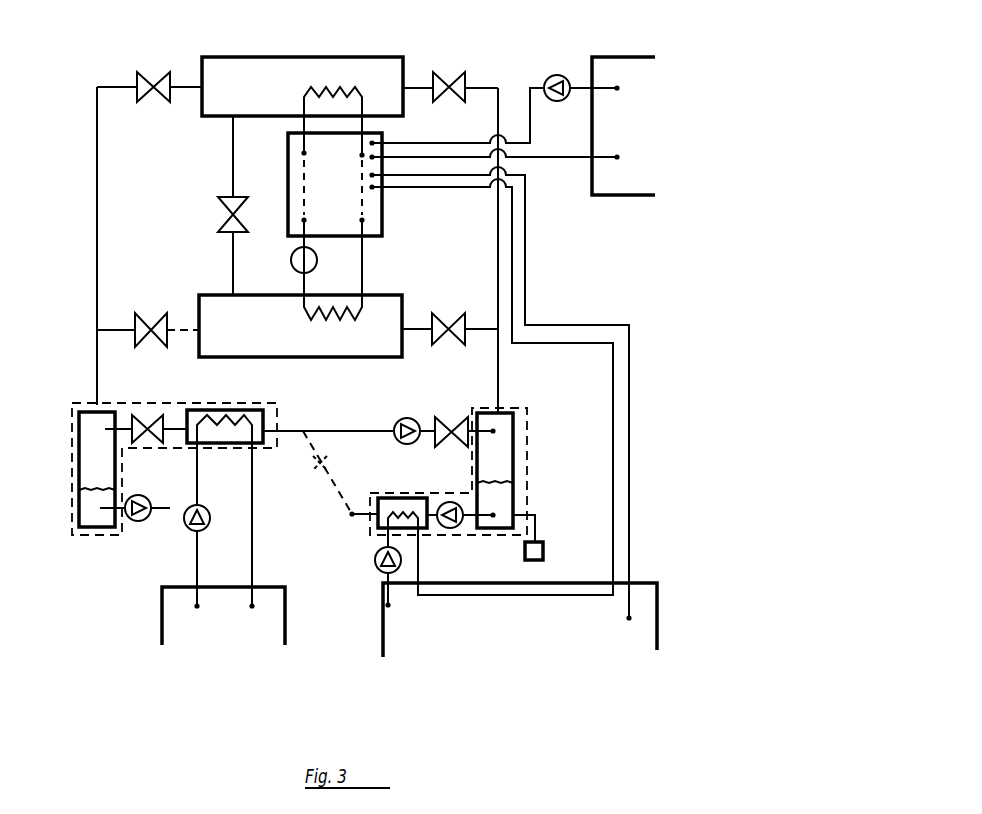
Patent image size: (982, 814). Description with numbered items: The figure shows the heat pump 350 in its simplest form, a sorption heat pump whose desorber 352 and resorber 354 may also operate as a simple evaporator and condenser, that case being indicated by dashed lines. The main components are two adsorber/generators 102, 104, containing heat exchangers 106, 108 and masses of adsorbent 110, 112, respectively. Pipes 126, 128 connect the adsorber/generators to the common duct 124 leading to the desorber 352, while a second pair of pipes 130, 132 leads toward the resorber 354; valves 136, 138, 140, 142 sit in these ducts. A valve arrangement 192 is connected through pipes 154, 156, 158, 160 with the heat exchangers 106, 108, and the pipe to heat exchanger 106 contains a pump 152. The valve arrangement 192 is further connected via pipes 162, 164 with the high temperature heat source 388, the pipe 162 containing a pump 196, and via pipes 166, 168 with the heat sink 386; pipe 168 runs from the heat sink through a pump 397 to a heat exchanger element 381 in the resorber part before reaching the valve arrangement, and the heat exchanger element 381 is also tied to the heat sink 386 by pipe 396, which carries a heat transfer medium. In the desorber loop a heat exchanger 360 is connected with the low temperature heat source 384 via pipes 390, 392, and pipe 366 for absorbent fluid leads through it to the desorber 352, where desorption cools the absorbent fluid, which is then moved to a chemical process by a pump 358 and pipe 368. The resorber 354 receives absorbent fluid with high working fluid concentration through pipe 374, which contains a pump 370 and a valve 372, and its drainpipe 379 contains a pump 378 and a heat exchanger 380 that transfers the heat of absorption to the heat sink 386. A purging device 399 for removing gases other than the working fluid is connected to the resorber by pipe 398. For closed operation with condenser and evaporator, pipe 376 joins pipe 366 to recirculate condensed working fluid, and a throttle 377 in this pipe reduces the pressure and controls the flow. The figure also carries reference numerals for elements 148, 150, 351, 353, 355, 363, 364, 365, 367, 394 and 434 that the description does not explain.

The adsorber/generator 102 is at (358, 357).
The adsorber/generator 104 is at (317, 56).
The heat exchanger 106 is at (348, 316).
The heat exchanger 108 is at (357, 88).
The mass of adsorbent 110 is at (333, 341).
The mass of adsorbent 112 is at (243, 87).
The common duct 124 is at (95, 388).
The pipe 126 is at (110, 323).
The pipe 128 is at (102, 87).
The pipe 130 is at (428, 329).
The pipe 132 is at (413, 86).
The valve 136 is at (163, 315).
The valve 138 is at (165, 75).
The valve 140 is at (437, 311).
The valve 142 is at (462, 76).
The connecting conduit 148 is at (232, 183).
The connecting valve 150 is at (270, 178).
The pump 152 is at (314, 262).
The pipe 154 is at (302, 222).
The pipe 156 is at (302, 152).
The pipe 158 is at (374, 142).
The pipe 160 is at (363, 222).
The pipe 162 is at (430, 143).
The pipe 164 is at (583, 158).
The pipe 166 is at (598, 323).
The pipe 168 is at (587, 345).
The valve arrangement 192 is at (335, 184).
The pump 196 is at (552, 75).
The heat pump 350 is at (168, 231).
The left storage tank 351 is at (90, 482).
The desorber 352 is at (78, 437).
The lower tank section 353 is at (92, 515).
The resorber 354 is at (515, 458).
The liquid level 355 is at (505, 502).
The pump 358 is at (140, 497).
The heat exchanger 360 is at (267, 413).
The valve 363 is at (142, 418).
The pump 364 is at (215, 503).
The valve 365 is at (158, 445).
The pipe for absorbent fluid 366 is at (304, 431).
The junction 367 is at (318, 448).
The pipe 368 is at (170, 509).
The pump 370 is at (400, 442).
The valve 372 is at (433, 418).
The pipe 374 is at (370, 430).
The pipe 376 is at (350, 513).
The throttle 377 is at (314, 463).
The pump 378 is at (450, 530).
The drainpipe 379 is at (467, 507).
The heat exchanger 380 is at (410, 497).
The heat exchanger element 381 is at (374, 508).
The low temperature heat source 384 is at (223, 620).
The heat sink 386 is at (520, 620).
The high temperature heat source 388 is at (623, 126).
The pipe 390 is at (198, 563).
The pipe 392 is at (253, 563).
The line 394 is at (420, 585).
The pipe 396 is at (385, 581).
The pump 397 is at (373, 556).
The pipe 398 is at (537, 517).
The purging device 399 is at (543, 548).
The main conduit 434 is at (497, 343).